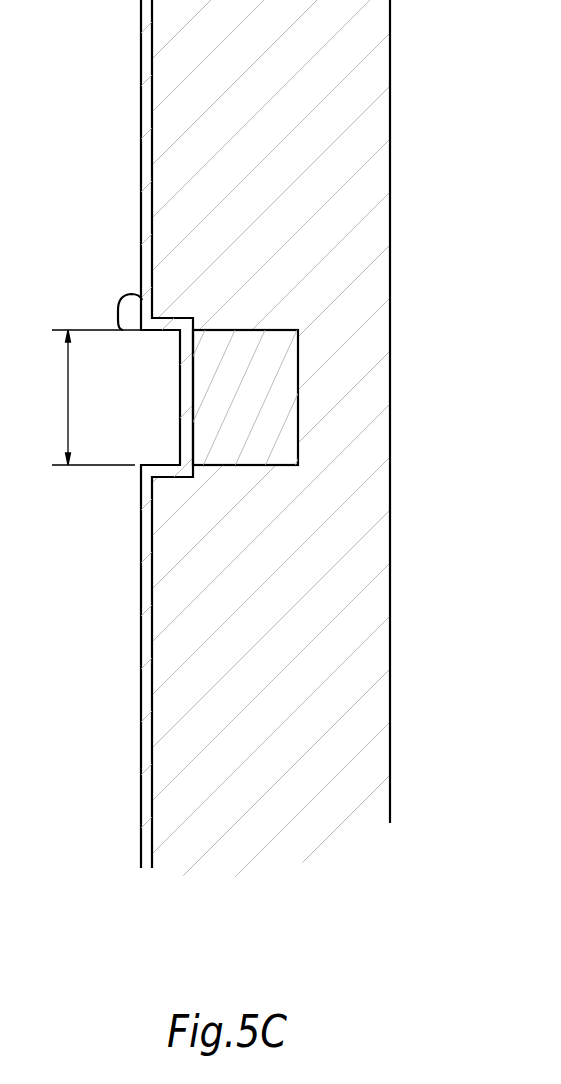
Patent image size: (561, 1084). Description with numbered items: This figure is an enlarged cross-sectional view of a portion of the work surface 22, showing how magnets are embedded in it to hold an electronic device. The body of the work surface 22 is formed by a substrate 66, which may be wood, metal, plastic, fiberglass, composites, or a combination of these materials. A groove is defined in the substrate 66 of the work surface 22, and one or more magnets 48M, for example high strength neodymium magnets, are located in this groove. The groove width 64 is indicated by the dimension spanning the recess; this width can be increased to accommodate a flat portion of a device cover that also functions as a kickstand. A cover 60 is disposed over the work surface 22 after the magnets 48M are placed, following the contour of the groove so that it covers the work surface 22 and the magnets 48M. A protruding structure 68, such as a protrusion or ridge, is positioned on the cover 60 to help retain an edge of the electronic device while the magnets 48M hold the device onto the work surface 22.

The work surface 22 is at (358, 142).
The cover 60 is at (147, 155).
The groove width 64 is at (68, 397).
The substrate 66 is at (362, 673).
The protruding structure 68 is at (125, 303).
The magnet 48M is at (283, 398).